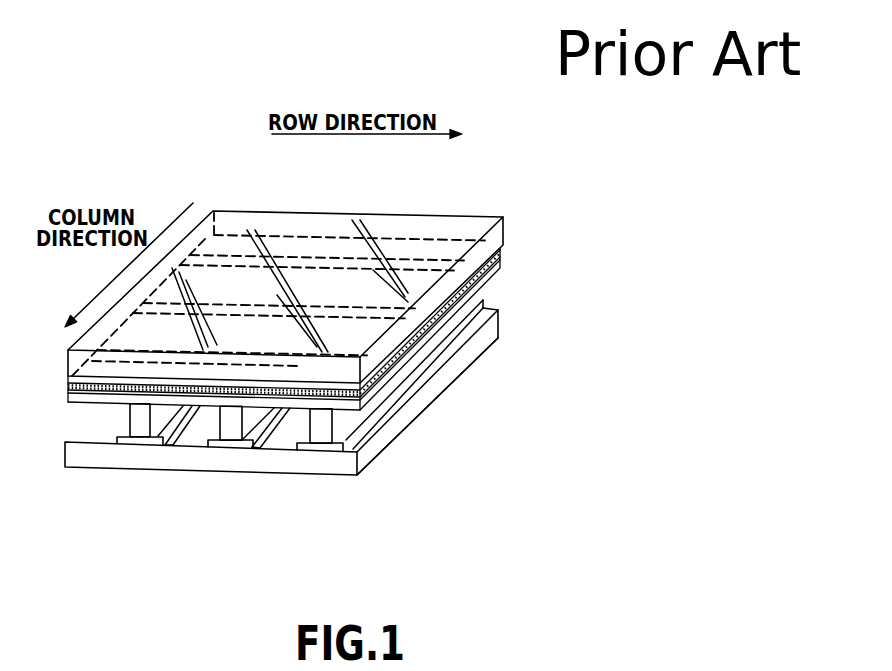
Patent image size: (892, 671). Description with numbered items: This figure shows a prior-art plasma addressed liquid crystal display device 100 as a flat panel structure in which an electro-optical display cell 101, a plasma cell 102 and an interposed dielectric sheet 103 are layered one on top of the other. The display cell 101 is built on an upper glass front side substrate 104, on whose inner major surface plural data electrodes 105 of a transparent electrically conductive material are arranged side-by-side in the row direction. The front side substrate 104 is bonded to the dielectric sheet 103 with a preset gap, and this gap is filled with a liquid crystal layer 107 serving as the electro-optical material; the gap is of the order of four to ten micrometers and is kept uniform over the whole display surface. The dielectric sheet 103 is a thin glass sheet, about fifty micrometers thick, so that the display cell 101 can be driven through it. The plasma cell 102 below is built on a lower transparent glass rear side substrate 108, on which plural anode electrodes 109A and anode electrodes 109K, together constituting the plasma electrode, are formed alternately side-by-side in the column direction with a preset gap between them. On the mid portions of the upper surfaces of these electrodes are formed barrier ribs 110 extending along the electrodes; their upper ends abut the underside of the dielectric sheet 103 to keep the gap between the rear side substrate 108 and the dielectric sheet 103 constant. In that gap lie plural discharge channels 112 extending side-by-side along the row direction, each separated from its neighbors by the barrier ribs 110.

The plasma addressed liquid crystal display device 100 is at (226, 190).
The electro-optical display cell 101 is at (514, 231).
The plasma cell 102 is at (506, 324).
The dielectric sheet 103 is at (503, 261).
The front side substrate 104 is at (243, 213).
The data electrodes 105 is at (482, 262).
The liquid crystal layer 107 is at (503, 252).
The rear side substrate 108 is at (383, 443).
The anode electrodes 109A is at (146, 440).
The anode electrodes 109K is at (236, 449).
The barrier ribs 110 is at (131, 416).
The discharge channels 112 is at (282, 436).